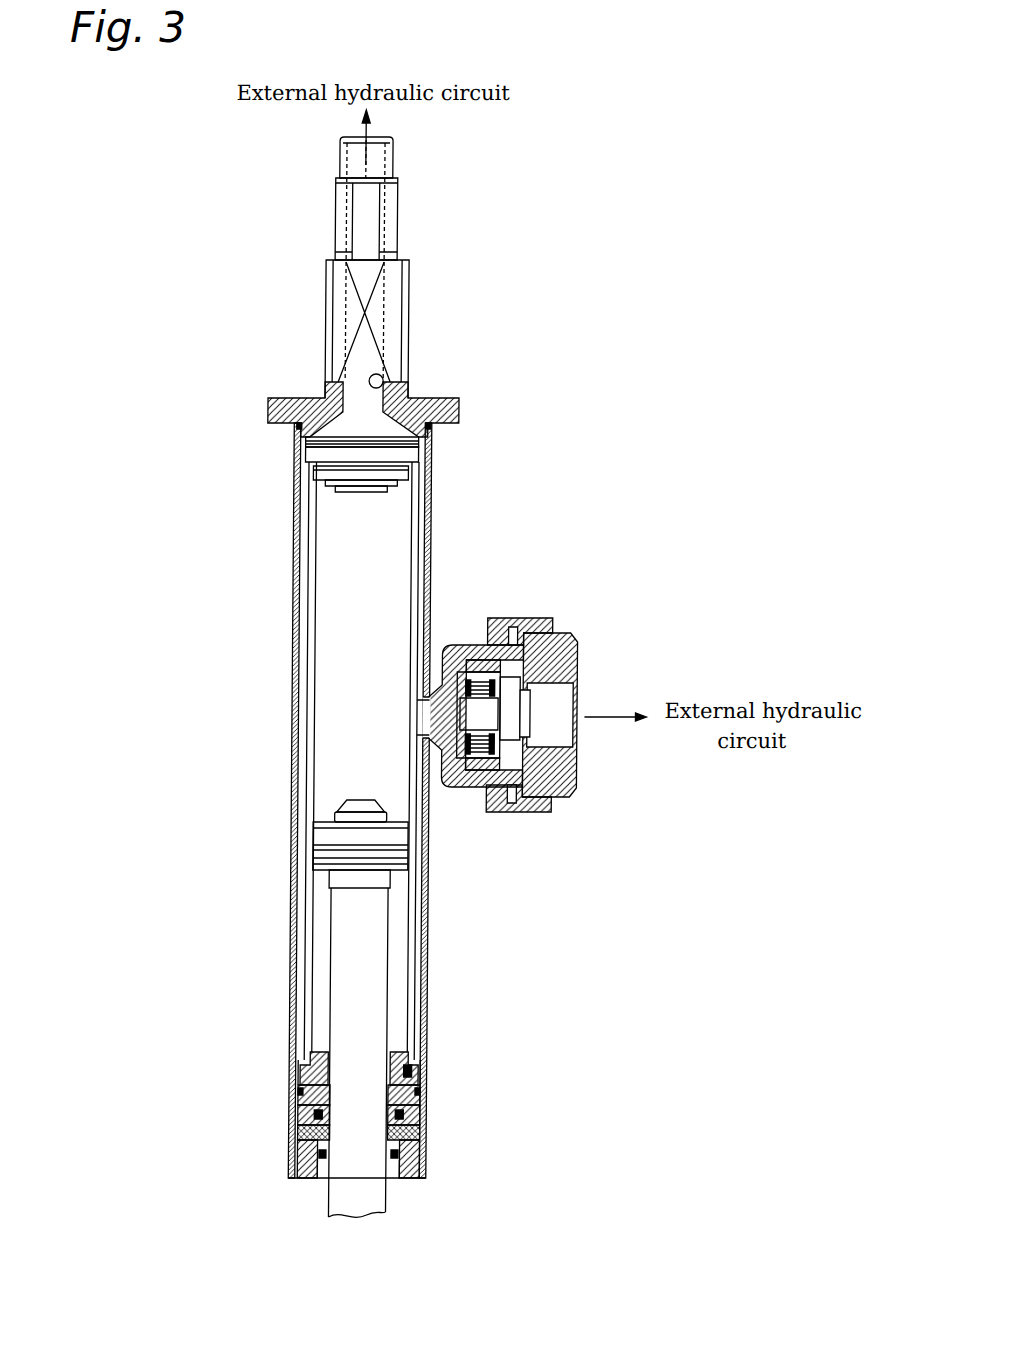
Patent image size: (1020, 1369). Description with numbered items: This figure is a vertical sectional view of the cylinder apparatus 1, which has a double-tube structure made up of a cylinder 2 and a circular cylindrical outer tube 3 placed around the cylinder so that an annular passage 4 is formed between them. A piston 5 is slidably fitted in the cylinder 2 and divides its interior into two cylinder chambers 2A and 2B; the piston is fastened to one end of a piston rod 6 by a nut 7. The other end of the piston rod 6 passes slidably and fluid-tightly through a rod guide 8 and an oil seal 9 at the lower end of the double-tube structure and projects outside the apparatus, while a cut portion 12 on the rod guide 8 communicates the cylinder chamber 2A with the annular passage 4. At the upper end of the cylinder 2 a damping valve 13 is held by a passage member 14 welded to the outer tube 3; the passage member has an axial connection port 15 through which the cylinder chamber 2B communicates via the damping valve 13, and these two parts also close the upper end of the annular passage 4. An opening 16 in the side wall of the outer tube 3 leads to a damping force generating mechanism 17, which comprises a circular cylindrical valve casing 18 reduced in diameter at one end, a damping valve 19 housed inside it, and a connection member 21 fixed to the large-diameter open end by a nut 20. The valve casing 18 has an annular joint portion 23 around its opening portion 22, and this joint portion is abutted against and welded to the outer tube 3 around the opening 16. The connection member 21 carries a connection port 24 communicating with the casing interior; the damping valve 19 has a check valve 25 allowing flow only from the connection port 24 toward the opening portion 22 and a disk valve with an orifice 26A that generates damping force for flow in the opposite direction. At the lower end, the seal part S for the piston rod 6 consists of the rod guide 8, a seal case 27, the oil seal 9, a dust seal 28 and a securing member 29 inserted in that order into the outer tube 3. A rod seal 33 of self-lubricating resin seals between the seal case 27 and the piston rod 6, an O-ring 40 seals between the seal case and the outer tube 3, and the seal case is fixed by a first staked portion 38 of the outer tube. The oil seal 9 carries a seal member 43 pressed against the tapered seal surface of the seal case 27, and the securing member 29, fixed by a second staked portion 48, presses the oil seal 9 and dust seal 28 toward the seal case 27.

The cylinder apparatus 1 is at (572, 297).
The cylinder 2 is at (303, 521).
The cylinder chamber 2A is at (328, 972).
The cylinder chamber 2B is at (331, 703).
The outer tube 3 is at (299, 576).
The annular passage 4 is at (309, 640).
The piston 5 is at (330, 838).
The piston rod 6 is at (359, 1200).
The nut 7 is at (338, 817).
The rod guide 8 is at (407, 1052).
The oil seal 9 is at (428, 1127).
The cut portion 12 is at (424, 1068).
The damping valve 13 is at (400, 462).
The passage member 14 is at (437, 400).
The connection port 15 is at (382, 377).
The opening 16 is at (410, 665).
The damping force generating mechanism 17 is at (546, 609).
The valve casing 18 is at (466, 620).
The damping valve 19 is at (496, 770).
The nut 20 is at (544, 810).
The connection member 21 is at (582, 650).
The opening portion 22 is at (445, 718).
The joint portion 23 is at (439, 797).
The connection port 24 is at (557, 700).
The check valve 25 is at (468, 777).
The orifice 26A is at (510, 618).
The seal case 27 is at (428, 1092).
The dust seal 28 is at (430, 1142).
The securing member 29 is at (421, 1178).
The rod seal 33 is at (301, 1100).
The first staked portion 38 is at (299, 1093).
The O-ring 40 is at (299, 1080).
The seal member 43 is at (301, 1120).
The second staked portion 48 is at (301, 1158).
The seal part S is at (310, 1196).